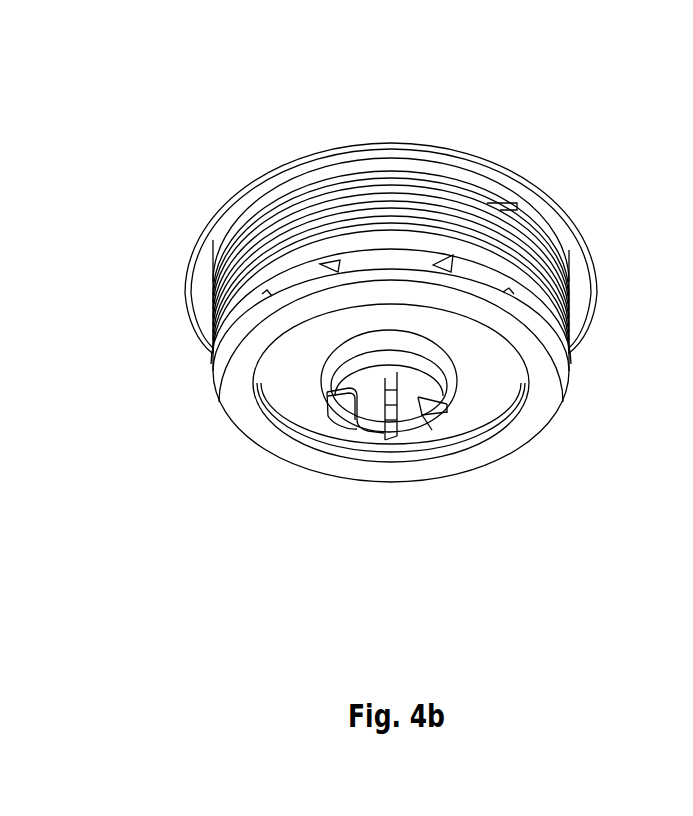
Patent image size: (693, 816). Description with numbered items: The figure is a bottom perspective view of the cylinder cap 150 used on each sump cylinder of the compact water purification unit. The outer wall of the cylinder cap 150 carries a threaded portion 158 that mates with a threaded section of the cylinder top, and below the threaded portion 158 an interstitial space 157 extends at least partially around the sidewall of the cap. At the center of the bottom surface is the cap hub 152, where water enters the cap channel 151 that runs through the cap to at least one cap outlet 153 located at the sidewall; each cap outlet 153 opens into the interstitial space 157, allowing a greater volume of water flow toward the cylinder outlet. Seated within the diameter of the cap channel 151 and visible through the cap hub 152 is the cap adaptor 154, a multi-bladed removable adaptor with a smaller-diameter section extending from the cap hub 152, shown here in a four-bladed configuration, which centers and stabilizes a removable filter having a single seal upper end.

The cylinder cap 150 is at (357, 144).
The cap channel 151 is at (345, 405).
The cap hub 152 is at (343, 352).
The cap outlet 153 is at (398, 260).
The cap adaptor 154 is at (410, 385).
The interstitial space 157 is at (553, 323).
The threaded portion 158 is at (220, 243).